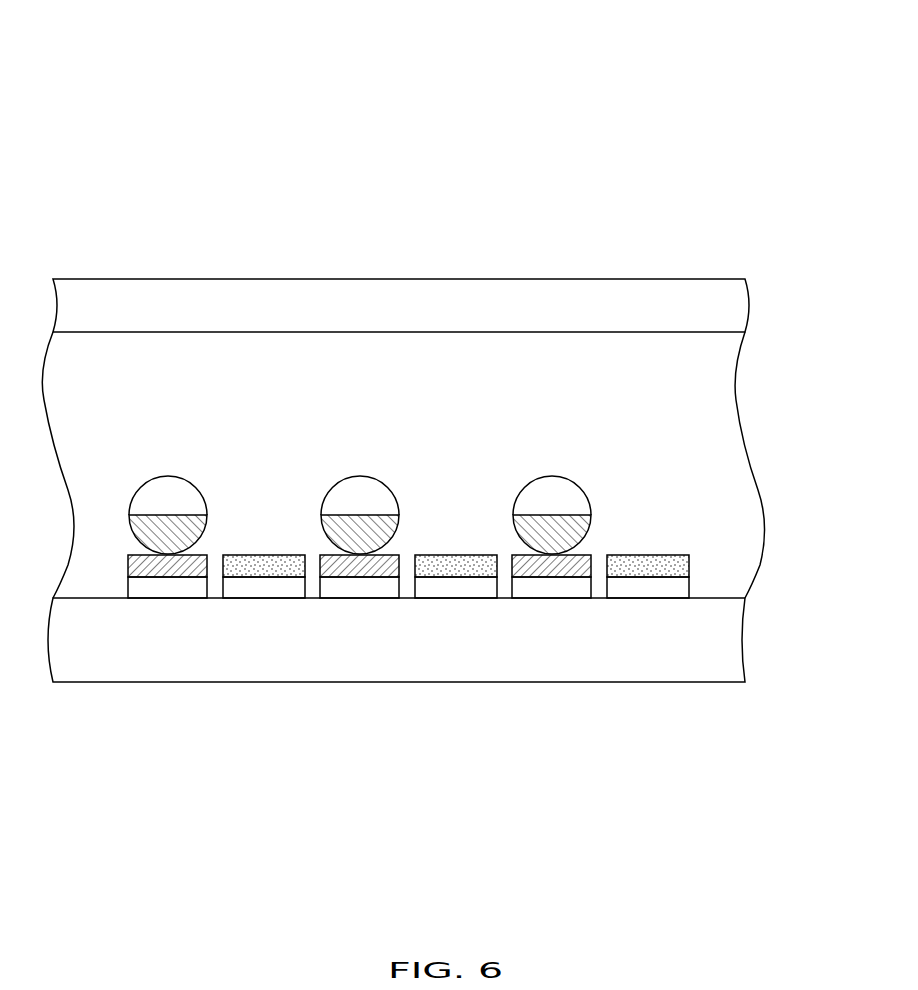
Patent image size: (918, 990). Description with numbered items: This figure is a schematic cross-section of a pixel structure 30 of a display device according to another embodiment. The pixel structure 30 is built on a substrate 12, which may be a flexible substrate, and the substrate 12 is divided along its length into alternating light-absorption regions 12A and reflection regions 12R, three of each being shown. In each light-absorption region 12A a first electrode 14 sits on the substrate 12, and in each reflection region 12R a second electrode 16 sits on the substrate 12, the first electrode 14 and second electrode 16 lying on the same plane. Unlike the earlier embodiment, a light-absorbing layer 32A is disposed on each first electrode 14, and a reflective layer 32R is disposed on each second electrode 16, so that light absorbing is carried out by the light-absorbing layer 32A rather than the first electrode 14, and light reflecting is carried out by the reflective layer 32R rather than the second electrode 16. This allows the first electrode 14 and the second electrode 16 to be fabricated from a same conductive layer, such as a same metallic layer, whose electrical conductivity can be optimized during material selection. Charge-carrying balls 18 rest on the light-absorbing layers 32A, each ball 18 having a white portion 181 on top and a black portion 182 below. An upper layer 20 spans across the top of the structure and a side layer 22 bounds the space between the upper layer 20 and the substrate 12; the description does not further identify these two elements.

The pixel structure 30 is at (719, 99).
The substrate 12 is at (729, 674).
The light-absorption region 12A is at (207, 256).
The reflection region 12R is at (305, 256).
The first electrode 14 is at (187, 588).
The second electrode 16 is at (283, 588).
The charge-carrying ball 18 is at (405, 488).
The white portion 181 is at (388, 487).
The black portion 182 is at (392, 516).
The chip 20 is at (731, 319).
The underfill / encapsulant 22 is at (736, 458).
The light-absorbing layer 32A is at (143, 567).
The reflective layer 32R is at (240, 567).